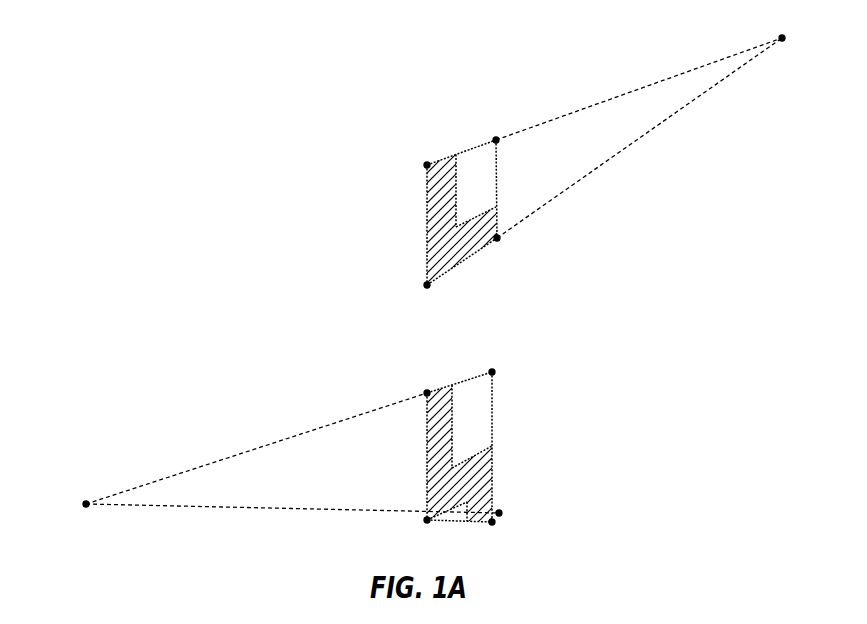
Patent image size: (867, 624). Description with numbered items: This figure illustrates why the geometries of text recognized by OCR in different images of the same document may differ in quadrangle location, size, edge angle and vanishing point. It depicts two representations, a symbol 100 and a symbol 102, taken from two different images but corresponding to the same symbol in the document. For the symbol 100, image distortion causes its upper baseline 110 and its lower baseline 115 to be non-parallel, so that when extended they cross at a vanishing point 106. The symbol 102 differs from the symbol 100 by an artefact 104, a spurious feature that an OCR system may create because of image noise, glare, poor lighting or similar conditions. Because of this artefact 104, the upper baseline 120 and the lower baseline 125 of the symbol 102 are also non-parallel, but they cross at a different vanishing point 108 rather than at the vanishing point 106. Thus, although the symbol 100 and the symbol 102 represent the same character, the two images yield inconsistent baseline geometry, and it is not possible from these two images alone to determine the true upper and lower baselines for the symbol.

The symbol 100 is at (431, 218).
The upper baseline 110 is at (475, 148).
The lower baseline 115 is at (462, 263).
The vanishing point 106 is at (786, 37).
The symbol 102 is at (420, 455).
The upper baseline 120 is at (475, 376).
The lower baseline 125 is at (433, 524).
The artefact 104 is at (502, 516).
The vanishing point 108 is at (84, 502).